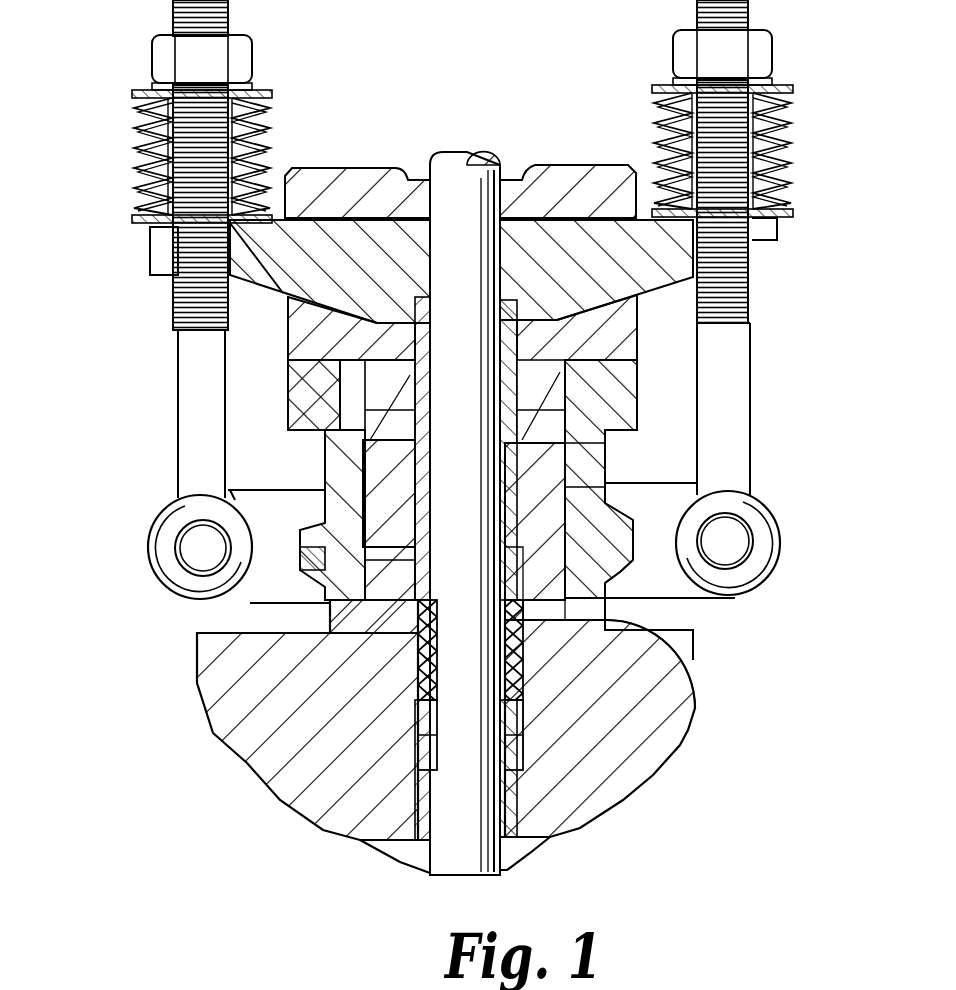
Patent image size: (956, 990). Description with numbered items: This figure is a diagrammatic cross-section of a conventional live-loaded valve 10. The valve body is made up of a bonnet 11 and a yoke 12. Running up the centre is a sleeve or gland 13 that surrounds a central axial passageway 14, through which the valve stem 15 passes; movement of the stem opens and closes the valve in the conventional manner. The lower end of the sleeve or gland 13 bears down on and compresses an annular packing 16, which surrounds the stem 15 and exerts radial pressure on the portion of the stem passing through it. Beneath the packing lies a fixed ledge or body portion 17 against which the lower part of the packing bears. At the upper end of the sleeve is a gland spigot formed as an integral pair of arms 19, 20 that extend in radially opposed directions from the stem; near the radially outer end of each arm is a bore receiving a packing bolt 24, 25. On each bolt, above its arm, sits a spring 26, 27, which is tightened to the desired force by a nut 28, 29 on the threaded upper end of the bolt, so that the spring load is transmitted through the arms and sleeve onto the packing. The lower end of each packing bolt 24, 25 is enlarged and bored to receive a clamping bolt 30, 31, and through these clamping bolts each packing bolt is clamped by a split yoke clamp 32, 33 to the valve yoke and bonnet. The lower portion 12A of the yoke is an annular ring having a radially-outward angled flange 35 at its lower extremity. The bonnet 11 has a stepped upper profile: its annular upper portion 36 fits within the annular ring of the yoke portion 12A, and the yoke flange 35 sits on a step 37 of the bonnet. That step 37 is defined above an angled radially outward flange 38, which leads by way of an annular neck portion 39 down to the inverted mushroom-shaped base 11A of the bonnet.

The valve 10 is at (490, 125).
The bonnet 11 is at (660, 733).
The inverted mushroom-shaped base 11A is at (578, 755).
The yoke 12 is at (297, 345).
The lower portion of the yoke 12A is at (593, 452).
The sleeve or gland 13 is at (430, 405).
The central axial passageway 14 is at (512, 566).
The valve stem 15 is at (455, 795).
The annular packing 16 is at (418, 677).
The fixed ledge or body portion 17 is at (420, 732).
The arm 19 is at (660, 278).
The arm 20 is at (157, 258).
The packing bolt 24 is at (745, 386).
The packing bolt 25 is at (185, 394).
The spring 26 is at (795, 143).
The spring 27 is at (135, 160).
The nut 28 is at (760, 48).
The nut 29 is at (165, 62).
The clamping bolt 30 is at (737, 549).
The clamping bolt 31 is at (207, 558).
The split yoke clamp 32 is at (618, 562).
The split yoke clamp 33 is at (247, 595).
The radially-outward angled flange 35 is at (393, 562).
The annular upper portion 36 is at (545, 473).
The step 37 is at (599, 548).
The angled radially outward flange 38 is at (660, 598).
The annular neck portion 39 is at (683, 660).